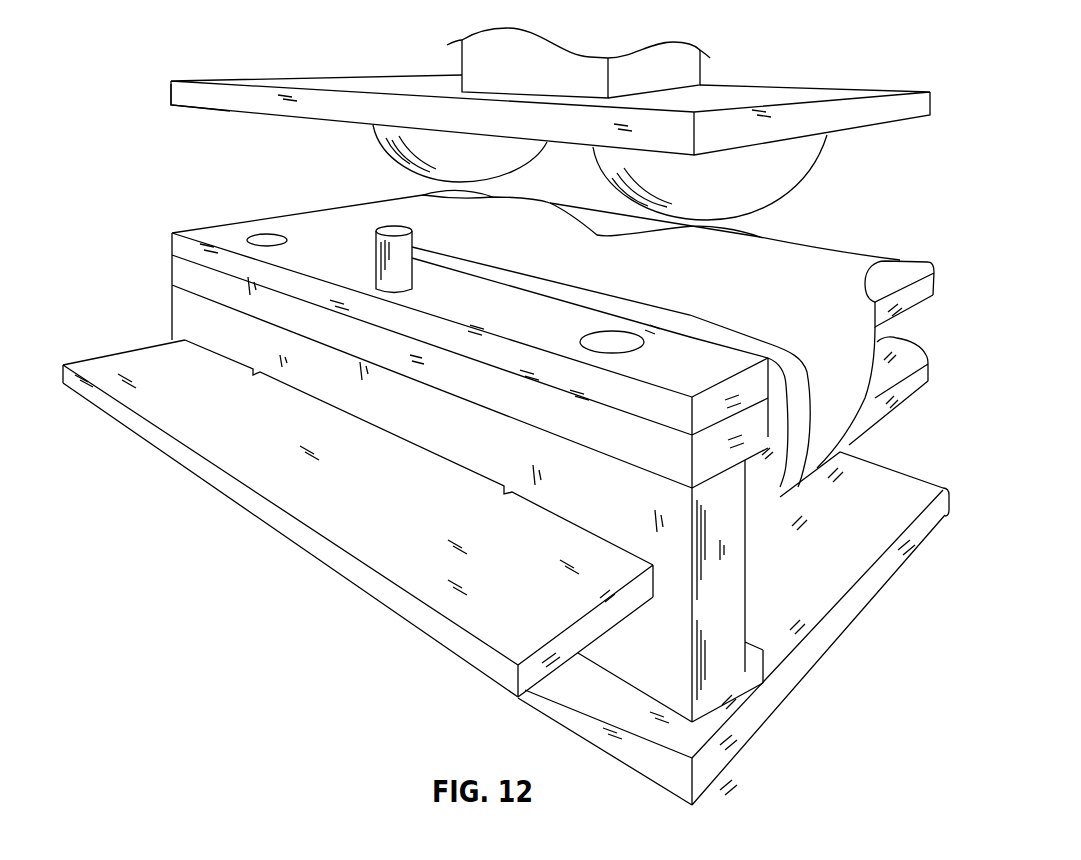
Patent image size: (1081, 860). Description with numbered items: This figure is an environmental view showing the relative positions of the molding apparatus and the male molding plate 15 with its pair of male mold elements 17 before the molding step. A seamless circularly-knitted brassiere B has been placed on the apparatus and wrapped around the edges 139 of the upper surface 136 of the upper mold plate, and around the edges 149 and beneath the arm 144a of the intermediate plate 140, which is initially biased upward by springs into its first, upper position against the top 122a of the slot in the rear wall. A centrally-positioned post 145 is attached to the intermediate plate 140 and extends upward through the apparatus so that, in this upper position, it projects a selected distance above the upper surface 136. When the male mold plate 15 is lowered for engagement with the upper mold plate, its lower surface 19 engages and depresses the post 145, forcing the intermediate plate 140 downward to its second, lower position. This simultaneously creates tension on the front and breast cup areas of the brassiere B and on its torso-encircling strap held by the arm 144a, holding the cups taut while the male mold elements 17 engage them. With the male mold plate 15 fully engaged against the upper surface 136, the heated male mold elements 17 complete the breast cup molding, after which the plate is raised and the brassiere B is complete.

The male molding plate 15 is at (930, 95).
The lower surface of the male mold plate 19 is at (190, 108).
The male mold elements 17 is at (380, 137).
The brassiere B is at (875, 238).
The upper surface of the upper mold plate 136 is at (907, 266).
The edges of the upper surface 139 is at (930, 290).
The arm of the intermediate plate 144a is at (915, 355).
The edges of the intermediate plate 149 is at (915, 383).
The post 145 is at (388, 262).
The top of the slot 122a is at (353, 416).
The intermediate plate 140 is at (307, 532).